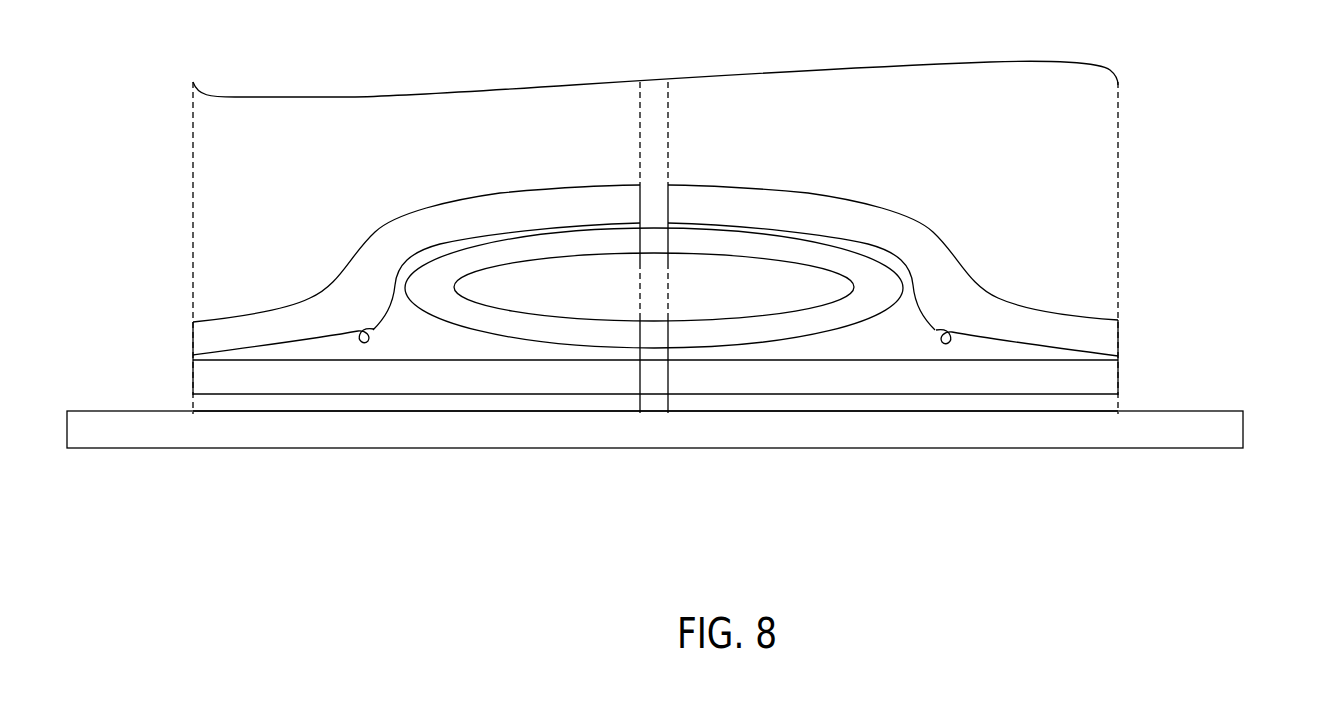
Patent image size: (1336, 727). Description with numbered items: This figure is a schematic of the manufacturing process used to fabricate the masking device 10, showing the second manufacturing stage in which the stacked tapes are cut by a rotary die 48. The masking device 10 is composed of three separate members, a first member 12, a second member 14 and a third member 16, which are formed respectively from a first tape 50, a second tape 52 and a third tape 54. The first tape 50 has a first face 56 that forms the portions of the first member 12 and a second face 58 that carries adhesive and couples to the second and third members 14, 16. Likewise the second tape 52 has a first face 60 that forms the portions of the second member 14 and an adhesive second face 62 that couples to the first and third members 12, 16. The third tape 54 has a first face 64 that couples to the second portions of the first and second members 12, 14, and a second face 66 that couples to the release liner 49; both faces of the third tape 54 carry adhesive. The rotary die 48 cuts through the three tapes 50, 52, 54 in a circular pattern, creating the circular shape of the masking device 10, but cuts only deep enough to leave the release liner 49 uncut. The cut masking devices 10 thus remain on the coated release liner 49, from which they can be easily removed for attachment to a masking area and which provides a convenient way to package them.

The masking device 10 is at (381, 110).
The first member 12 is at (608, 198).
The second member 14 is at (502, 255).
The third member 16 is at (329, 380).
The rotary die 48 is at (193, 98).
The release liner 49 is at (1255, 429).
The first tape 50 is at (181, 338).
The second tape 52 is at (447, 340).
The third tape 54 is at (181, 379).
The first face 56 is at (292, 305).
The second face 58 is at (368, 328).
The first face 60 is at (540, 262).
The second face 62 is at (432, 318).
The first face 64 is at (467, 368).
The second face 66 is at (427, 397).